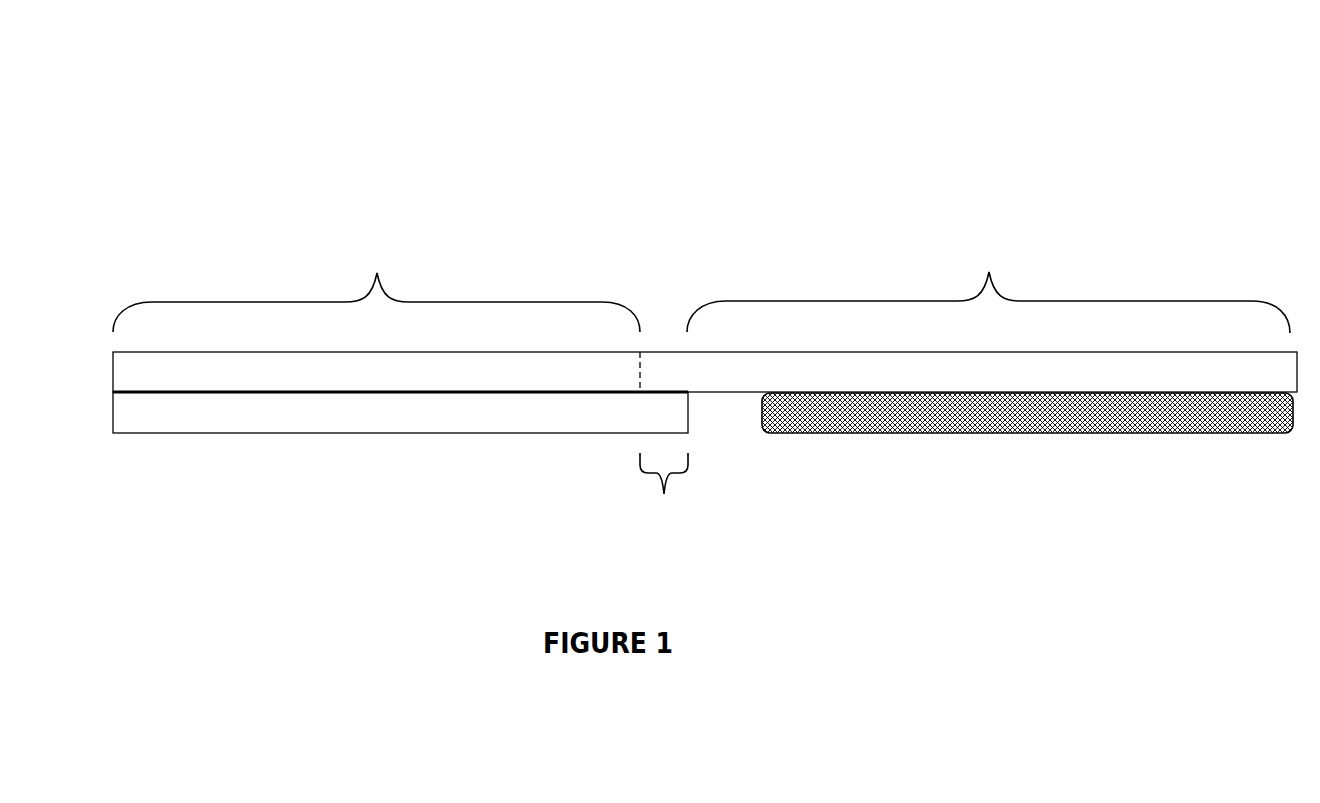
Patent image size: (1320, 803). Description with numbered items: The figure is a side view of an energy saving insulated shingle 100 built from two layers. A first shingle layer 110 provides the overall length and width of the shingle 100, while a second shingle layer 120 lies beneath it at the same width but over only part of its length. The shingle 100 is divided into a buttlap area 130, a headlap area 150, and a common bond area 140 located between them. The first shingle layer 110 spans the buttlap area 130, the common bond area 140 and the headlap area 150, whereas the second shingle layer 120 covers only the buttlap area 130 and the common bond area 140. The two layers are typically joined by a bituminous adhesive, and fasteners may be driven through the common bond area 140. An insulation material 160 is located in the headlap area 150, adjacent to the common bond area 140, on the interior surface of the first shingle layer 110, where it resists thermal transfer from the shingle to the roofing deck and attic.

The energy saving insulated shingle 100 is at (757, 185).
The first shingle layer 110 is at (193, 372).
The second shingle layer 120 is at (385, 413).
The buttlap area 130 is at (376, 267).
The common bond area 140 is at (657, 444).
The headlap area 150 is at (988, 278).
The insulation material 160 is at (910, 413).